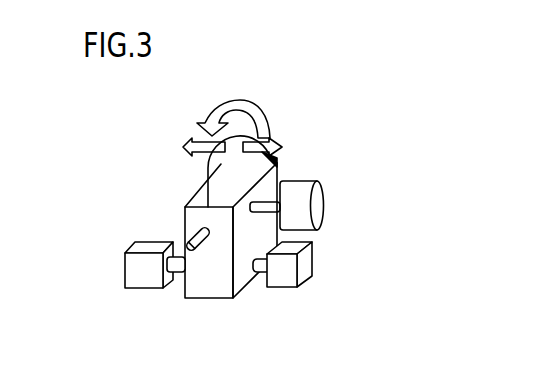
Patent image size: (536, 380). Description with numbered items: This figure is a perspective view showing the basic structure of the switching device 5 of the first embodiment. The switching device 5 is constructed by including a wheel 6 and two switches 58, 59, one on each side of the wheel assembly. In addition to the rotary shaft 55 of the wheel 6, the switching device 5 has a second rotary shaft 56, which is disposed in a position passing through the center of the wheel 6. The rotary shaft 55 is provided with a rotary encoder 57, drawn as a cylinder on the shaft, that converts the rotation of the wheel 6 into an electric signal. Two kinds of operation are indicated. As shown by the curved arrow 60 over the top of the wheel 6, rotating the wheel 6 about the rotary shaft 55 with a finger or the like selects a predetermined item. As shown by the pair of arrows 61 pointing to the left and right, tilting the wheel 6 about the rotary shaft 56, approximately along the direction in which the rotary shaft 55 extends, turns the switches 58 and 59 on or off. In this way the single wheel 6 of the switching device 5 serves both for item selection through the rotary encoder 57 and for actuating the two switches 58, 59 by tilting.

The switching device 5 is at (331, 238).
The wheel 6 is at (233, 169).
The rotary shaft 55 is at (268, 204).
The rotary shaft 56 is at (189, 242).
The rotary encoder 57 is at (319, 207).
The switch 58 is at (284, 272).
The switch 59 is at (144, 273).
The arrow 60 is at (212, 106).
The arrows 61 is at (188, 143).